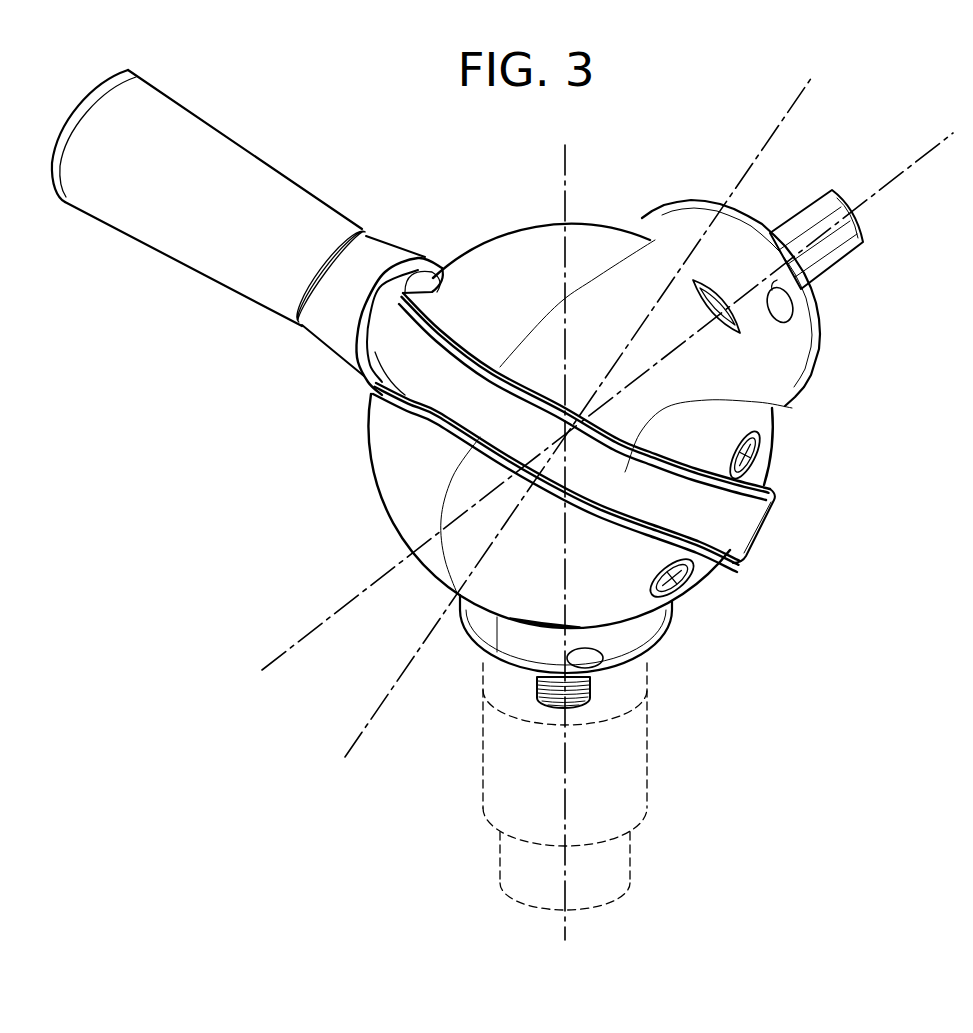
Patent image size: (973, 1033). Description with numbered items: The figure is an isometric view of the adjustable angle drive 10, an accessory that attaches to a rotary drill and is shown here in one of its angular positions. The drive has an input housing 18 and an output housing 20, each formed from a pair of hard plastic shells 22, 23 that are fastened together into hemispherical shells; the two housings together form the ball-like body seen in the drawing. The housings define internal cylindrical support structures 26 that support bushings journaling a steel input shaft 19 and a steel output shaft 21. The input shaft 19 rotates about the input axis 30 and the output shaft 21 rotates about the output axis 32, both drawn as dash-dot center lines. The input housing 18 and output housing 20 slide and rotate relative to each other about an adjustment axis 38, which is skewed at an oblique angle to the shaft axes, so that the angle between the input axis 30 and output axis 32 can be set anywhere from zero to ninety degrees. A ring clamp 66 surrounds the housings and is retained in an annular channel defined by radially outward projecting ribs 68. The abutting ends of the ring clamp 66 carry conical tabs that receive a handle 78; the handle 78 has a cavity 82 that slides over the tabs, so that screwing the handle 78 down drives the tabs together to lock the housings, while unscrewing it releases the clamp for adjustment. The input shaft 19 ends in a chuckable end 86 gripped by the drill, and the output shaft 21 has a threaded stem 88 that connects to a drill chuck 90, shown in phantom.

The adjustable angle drive 10 is at (256, 748).
The input housing 18 is at (816, 427).
The input shaft 19 is at (858, 278).
The output housing 20 is at (742, 581).
The output shaft 21 is at (513, 690).
The hard plastic shell 22 is at (387, 474).
The hard plastic shell 23 is at (607, 237).
The internal cylindrical support structure 26 is at (806, 330).
The input axis 30 is at (289, 643).
The output axis 32 is at (562, 188).
The adjustment axis 38 is at (366, 733).
The ring clamp 66 is at (390, 383).
The radially outward projecting rib 68 is at (500, 362).
The handle 78 is at (187, 113).
The handle cavity 82 is at (428, 280).
The chuckable end 86 is at (860, 211).
The threaded stem 88 is at (592, 684).
The drill chuck 90 is at (640, 737).